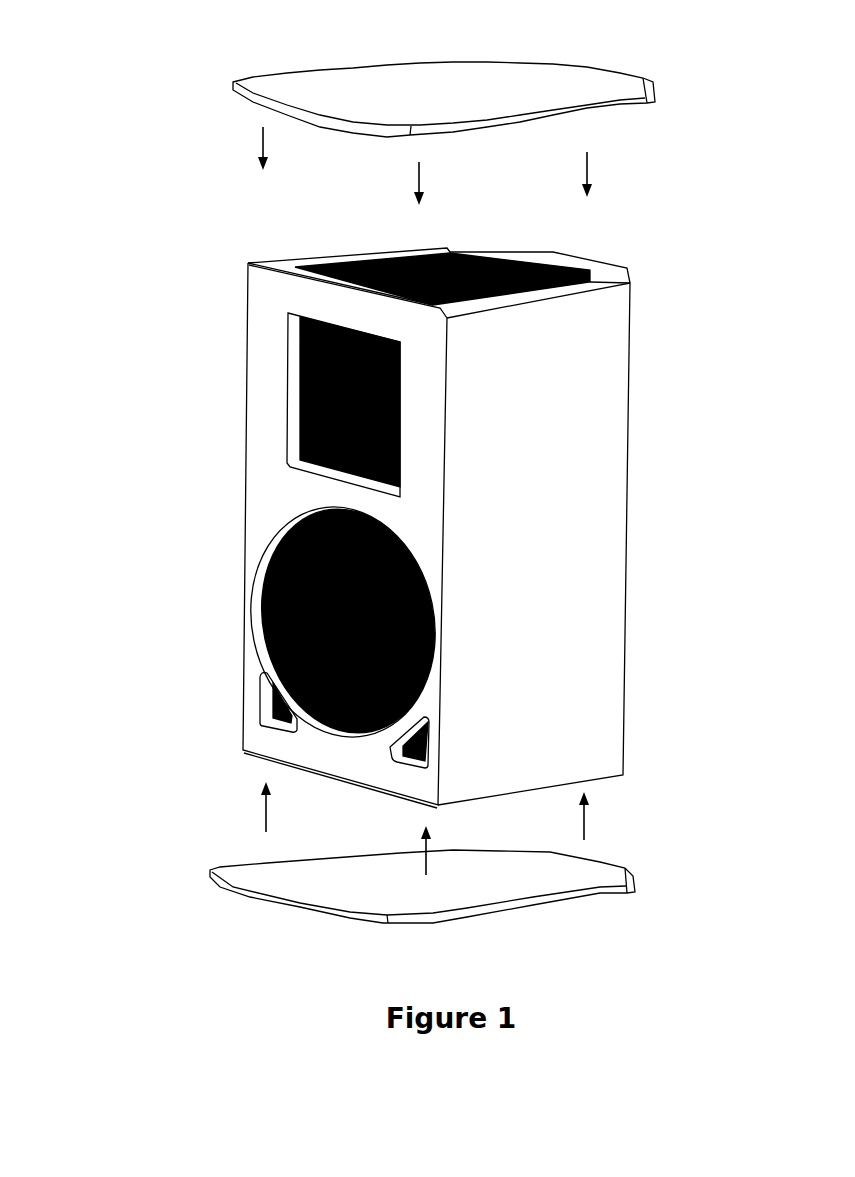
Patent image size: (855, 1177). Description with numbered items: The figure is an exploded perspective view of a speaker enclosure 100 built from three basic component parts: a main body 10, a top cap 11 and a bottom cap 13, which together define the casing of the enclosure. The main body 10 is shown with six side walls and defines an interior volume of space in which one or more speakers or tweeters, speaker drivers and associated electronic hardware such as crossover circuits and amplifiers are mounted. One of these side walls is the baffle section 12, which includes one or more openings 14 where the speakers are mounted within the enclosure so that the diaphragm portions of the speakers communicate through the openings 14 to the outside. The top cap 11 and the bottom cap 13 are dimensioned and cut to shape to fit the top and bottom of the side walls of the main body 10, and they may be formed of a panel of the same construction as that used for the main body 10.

The speaker enclosure 100 is at (172, 364).
The main body 10 is at (615, 350).
The top cap 11 is at (593, 82).
The baffle section 12 is at (267, 402).
The bottom cap 13 is at (592, 870).
The openings 14 is at (403, 747).